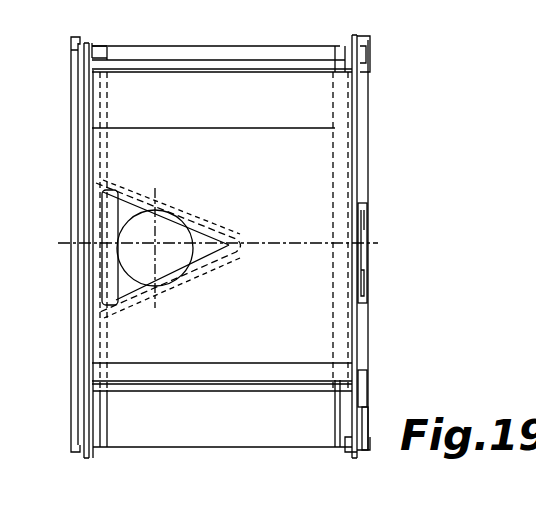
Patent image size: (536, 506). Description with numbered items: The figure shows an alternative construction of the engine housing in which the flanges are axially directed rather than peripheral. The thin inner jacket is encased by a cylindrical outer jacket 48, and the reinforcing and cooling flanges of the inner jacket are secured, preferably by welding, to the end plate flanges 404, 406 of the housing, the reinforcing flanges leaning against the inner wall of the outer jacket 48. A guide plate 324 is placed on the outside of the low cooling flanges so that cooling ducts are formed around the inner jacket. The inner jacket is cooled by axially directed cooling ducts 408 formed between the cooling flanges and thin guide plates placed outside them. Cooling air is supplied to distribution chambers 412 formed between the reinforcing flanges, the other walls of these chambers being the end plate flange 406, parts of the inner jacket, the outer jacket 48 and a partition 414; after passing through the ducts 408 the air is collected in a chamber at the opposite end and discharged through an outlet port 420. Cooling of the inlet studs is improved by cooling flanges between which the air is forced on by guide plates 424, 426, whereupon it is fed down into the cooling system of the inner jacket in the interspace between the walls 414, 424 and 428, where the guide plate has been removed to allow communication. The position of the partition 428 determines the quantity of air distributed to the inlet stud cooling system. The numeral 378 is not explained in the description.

The end plate flange 406 is at (92, 41).
The cylindrical outer jacket 48 is at (210, 45).
The end plate flange 404 is at (348, 38).
The guide plate 424 is at (108, 191).
The partition 428 is at (177, 287).
The guide plate 324 is at (277, 245).
The guide plate 426 is at (105, 298).
The partition 414 is at (218, 270).
The outer left plate 378 is at (89, 426).
The distribution chamber 412 is at (102, 438).
The cooling duct 408 is at (235, 388).
The outlet port 420 is at (357, 422).